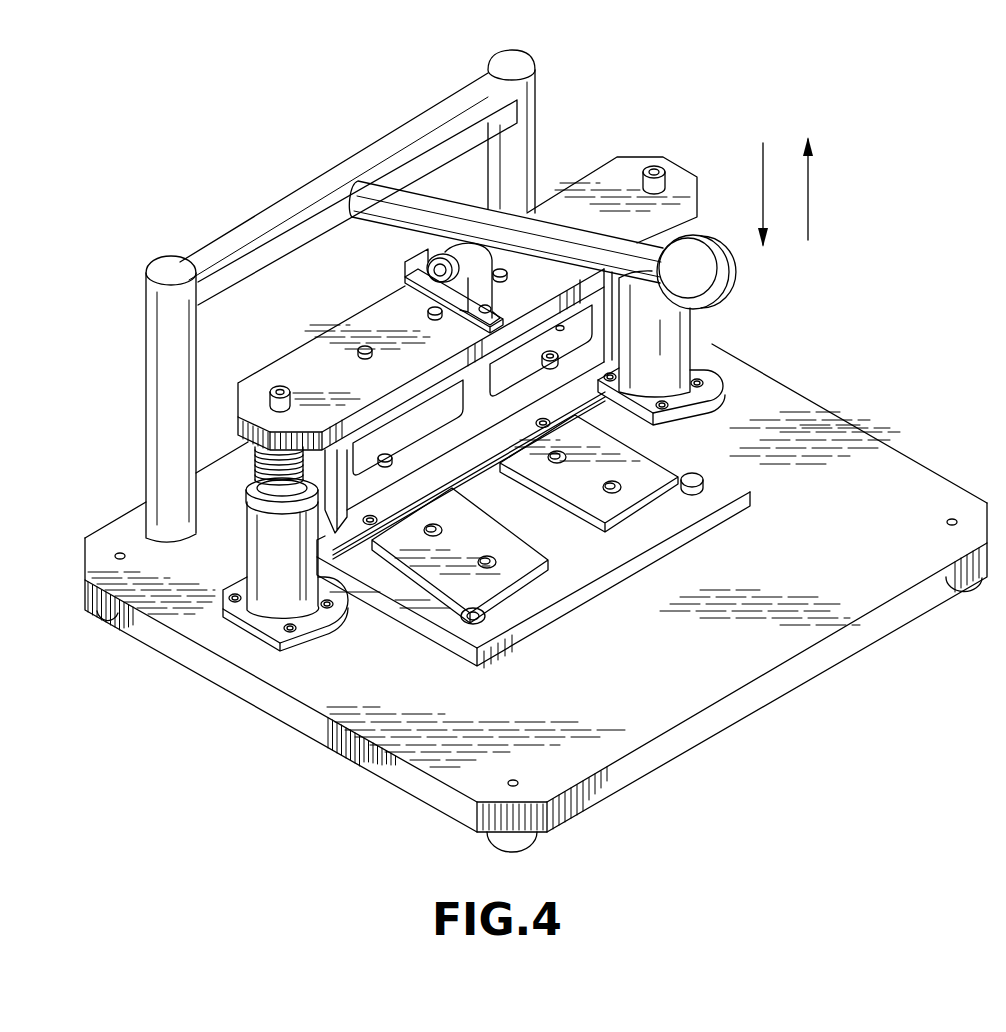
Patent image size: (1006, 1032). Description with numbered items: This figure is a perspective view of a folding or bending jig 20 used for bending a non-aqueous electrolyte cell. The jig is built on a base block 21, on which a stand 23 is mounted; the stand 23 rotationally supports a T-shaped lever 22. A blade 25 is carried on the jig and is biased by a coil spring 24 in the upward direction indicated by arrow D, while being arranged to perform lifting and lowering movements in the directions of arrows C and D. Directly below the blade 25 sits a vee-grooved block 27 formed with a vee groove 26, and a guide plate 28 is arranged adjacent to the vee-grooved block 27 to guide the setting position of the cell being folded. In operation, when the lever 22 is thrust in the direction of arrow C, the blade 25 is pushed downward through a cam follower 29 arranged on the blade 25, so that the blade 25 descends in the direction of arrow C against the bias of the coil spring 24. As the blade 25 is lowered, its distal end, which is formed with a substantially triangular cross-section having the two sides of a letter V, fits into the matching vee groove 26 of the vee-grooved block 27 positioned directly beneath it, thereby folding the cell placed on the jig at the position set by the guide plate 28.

The bending jig 20 is at (795, 362).
The base block 21 is at (773, 650).
The T-shaped lever 22 is at (500, 222).
The stand 23 is at (538, 88).
The coil spring 24 is at (252, 462).
The blade 25 is at (337, 558).
The vee groove 26 is at (385, 535).
The vee-grooved block 27 is at (372, 548).
The guide plate 28 is at (520, 563).
The cam follower 29 is at (414, 262).